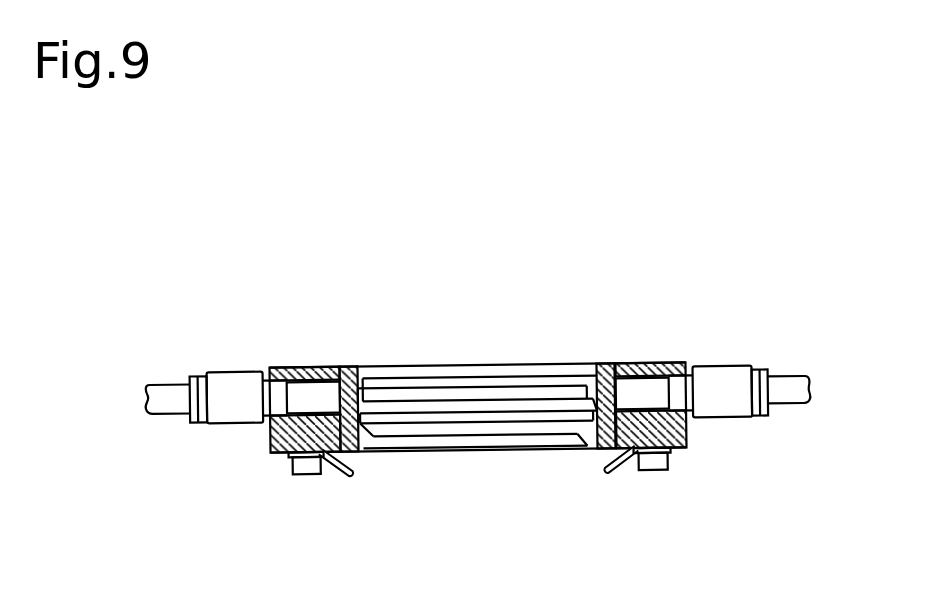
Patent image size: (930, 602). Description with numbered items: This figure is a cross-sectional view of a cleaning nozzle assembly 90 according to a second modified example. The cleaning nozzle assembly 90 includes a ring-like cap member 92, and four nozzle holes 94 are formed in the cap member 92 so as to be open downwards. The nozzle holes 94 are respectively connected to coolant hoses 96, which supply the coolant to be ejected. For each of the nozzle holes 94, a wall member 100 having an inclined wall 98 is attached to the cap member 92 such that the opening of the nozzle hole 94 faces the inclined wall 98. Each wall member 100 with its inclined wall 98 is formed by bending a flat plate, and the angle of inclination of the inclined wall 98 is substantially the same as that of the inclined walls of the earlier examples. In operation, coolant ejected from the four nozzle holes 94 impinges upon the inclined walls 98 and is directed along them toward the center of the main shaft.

The cleaning nozzle assembly 90 is at (668, 338).
The cap member 92 is at (672, 432).
The nozzle holes 94 is at (357, 454).
The coolant hoses 96 is at (157, 390).
The inclined wall 98 is at (357, 460).
The wall member 100 is at (337, 468).